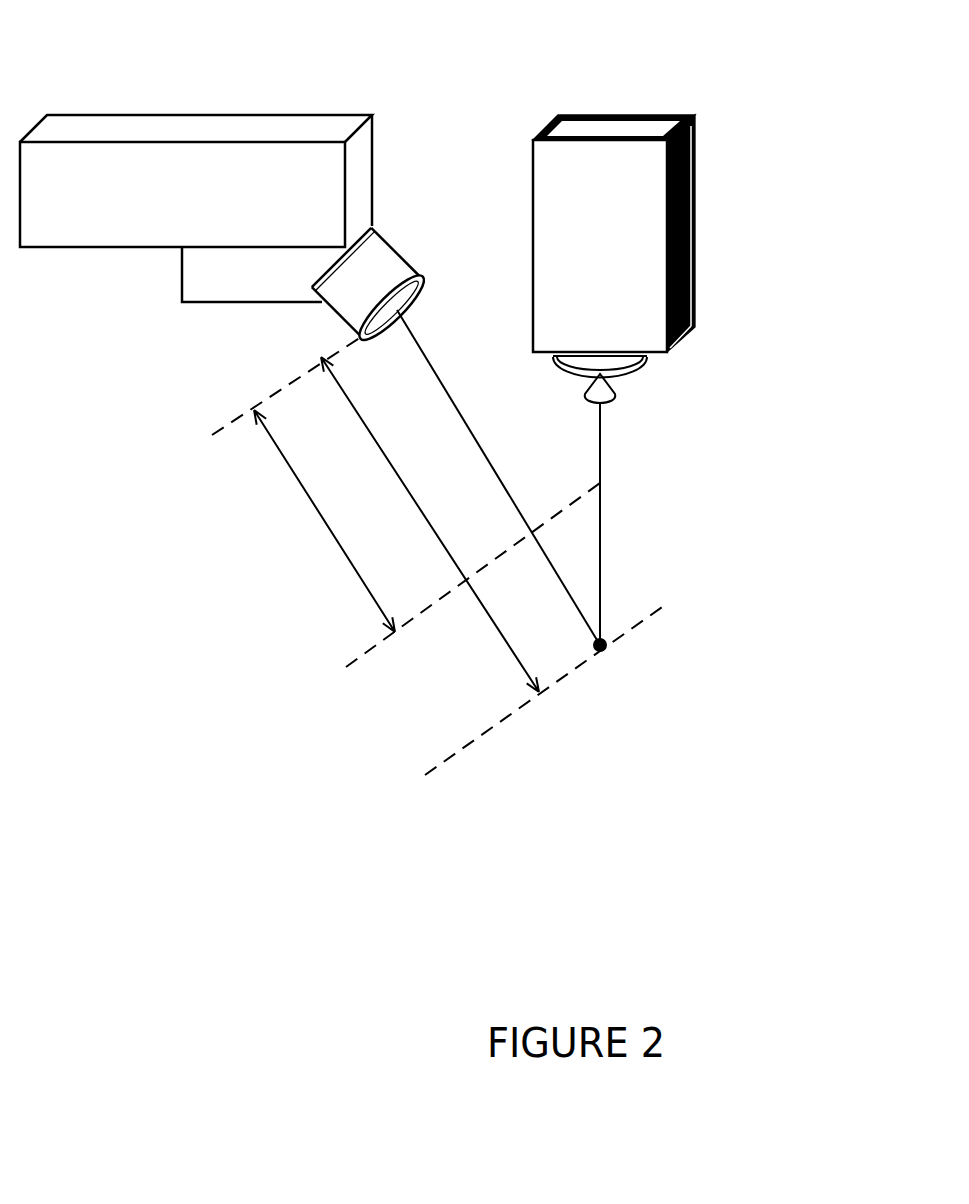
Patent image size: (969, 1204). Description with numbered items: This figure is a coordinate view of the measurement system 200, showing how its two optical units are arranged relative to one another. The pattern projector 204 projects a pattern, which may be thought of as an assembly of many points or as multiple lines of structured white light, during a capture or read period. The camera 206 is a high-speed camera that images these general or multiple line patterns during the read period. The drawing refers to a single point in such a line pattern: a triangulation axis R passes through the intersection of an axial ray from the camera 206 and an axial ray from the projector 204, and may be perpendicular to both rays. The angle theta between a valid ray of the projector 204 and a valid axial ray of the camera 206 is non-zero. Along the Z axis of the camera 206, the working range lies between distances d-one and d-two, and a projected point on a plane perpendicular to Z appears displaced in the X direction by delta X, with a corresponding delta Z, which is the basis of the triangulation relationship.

The laser displacement measurement system 200 is at (920, 52).
The pattern projector 204 is at (695, 197).
The camera 206 is at (372, 172).